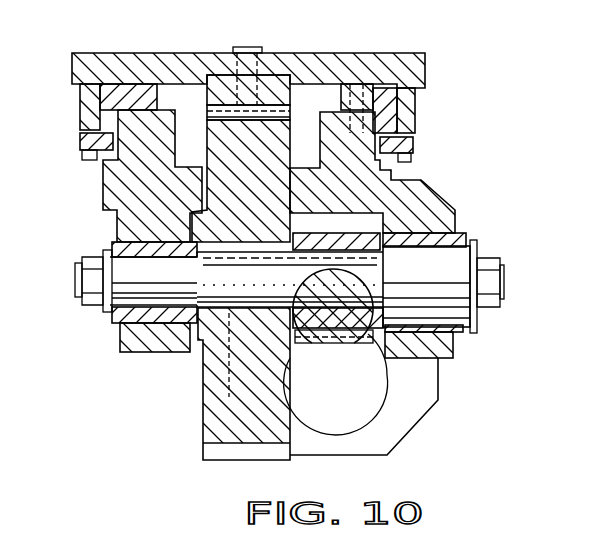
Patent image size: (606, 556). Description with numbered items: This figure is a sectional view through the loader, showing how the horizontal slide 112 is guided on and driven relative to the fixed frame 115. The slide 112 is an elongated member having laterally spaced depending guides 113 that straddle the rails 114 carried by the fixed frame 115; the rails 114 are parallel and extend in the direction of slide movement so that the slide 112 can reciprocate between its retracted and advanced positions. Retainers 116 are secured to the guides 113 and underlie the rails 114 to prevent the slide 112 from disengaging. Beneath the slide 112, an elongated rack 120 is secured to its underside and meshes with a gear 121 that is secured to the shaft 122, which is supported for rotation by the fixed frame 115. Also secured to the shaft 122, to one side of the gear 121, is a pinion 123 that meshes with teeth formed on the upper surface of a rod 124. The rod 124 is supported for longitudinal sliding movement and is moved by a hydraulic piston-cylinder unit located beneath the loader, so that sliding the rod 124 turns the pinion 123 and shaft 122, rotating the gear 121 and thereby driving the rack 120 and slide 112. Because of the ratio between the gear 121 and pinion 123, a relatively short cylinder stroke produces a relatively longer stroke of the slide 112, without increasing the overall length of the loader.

The slide 112 is at (406, 63).
The guides 113 is at (85, 115).
The rails 114 is at (142, 97).
The fixed frame 115 is at (113, 198).
The retainers 116 is at (80, 147).
The rack 120 is at (270, 78).
The gear 121 is at (210, 418).
The shaft 122 is at (290, 286).
The pinion 123 is at (352, 334).
The rod 124 is at (353, 392).